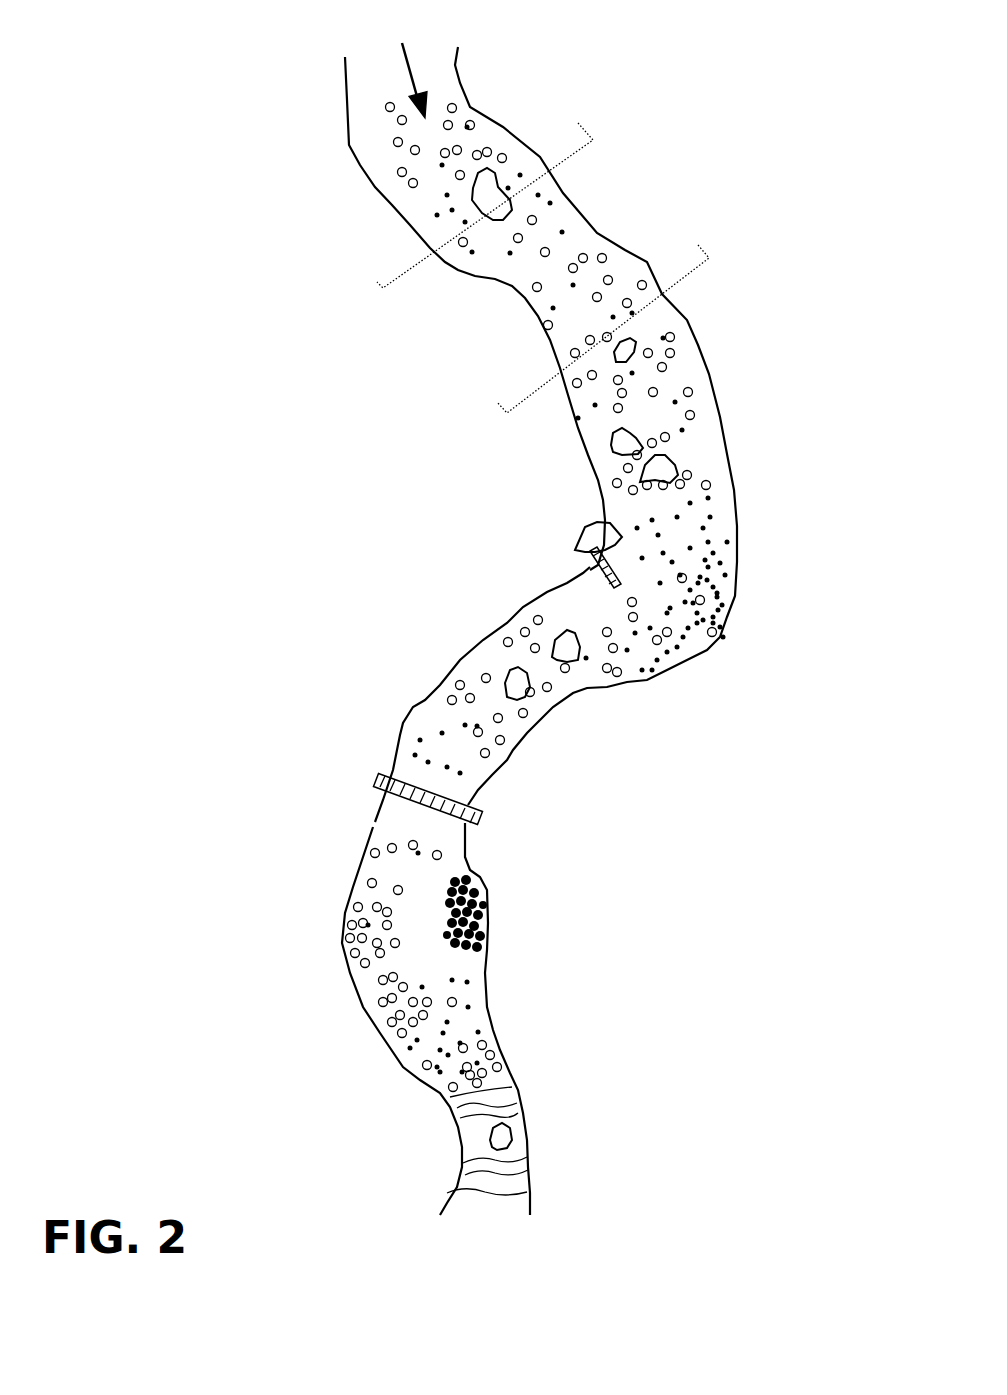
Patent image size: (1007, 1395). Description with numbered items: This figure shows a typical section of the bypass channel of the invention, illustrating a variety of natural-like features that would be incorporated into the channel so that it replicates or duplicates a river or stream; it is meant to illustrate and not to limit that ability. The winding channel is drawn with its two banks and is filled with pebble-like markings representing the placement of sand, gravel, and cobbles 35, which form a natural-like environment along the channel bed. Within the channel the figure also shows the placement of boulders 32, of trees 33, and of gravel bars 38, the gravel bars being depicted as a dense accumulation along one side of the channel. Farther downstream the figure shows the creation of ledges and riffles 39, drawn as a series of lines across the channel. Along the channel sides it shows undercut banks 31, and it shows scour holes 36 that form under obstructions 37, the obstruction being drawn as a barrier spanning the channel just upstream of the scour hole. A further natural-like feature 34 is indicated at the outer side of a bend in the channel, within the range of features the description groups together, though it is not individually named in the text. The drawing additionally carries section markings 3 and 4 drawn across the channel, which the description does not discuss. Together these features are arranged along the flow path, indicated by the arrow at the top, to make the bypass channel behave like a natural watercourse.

The section line 3- 3 is at (476, 193).
The section line 4- 4 is at (592, 314).
The undercut banks 31 is at (380, 198).
The boulders 32 is at (618, 436).
The trees 33 is at (585, 533).
The natural-like feature 34 is at (722, 630).
The sand, gravel, and cobbles 35 is at (507, 738).
The scour holes 36 is at (392, 818).
The obstructions 37 is at (487, 815).
The gravel bars 38 is at (490, 917).
The ledges and riffles 39 is at (515, 1092).